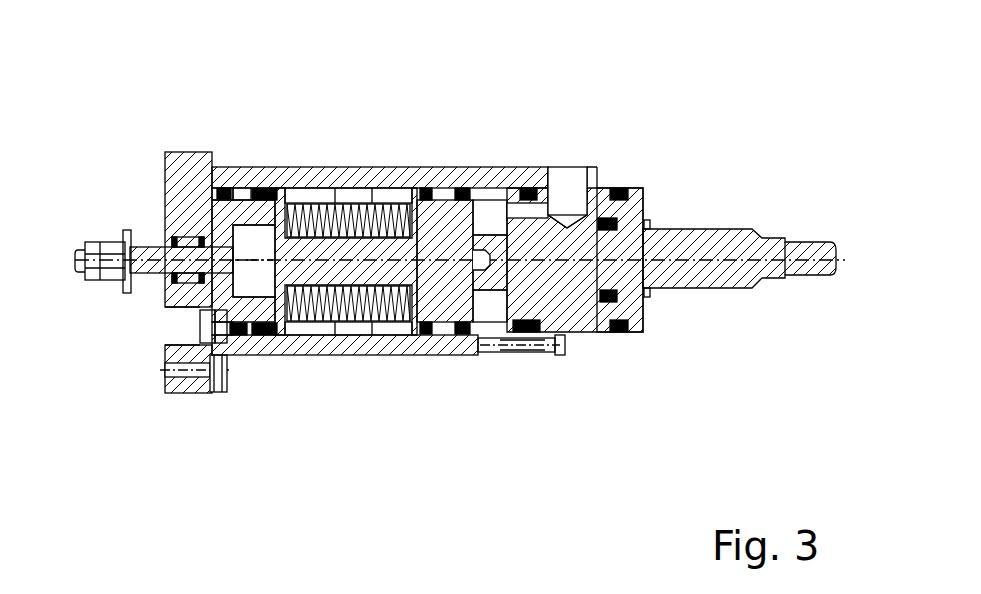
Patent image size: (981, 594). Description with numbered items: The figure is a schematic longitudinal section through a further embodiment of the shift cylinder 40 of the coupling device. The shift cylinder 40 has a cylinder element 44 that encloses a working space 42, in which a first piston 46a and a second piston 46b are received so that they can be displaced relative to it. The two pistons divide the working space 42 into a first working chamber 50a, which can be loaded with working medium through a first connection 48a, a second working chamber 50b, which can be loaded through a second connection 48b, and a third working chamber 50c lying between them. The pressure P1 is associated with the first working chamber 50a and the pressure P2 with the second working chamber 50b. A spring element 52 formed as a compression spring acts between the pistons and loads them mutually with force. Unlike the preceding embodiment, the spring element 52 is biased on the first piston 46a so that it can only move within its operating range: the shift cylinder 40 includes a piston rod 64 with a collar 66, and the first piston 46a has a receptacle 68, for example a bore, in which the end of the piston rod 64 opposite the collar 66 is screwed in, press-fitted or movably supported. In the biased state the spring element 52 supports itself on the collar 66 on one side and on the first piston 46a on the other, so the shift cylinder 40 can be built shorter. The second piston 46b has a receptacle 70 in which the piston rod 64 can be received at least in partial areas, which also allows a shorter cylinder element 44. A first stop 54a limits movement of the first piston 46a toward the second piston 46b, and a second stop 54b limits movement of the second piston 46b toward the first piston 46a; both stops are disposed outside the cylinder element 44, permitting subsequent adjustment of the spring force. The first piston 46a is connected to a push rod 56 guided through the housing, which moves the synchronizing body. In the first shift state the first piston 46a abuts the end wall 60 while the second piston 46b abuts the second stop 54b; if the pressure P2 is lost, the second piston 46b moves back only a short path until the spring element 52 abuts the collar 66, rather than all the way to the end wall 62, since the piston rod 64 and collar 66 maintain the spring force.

The shift cylinder 40 is at (238, 452).
The working space 42 is at (150, 208).
The cylinder element 44 is at (323, 170).
The first piston 46a is at (450, 212).
The second piston 46b is at (238, 212).
The first connection 48a is at (580, 172).
The second connection 48b is at (183, 326).
The first working chamber 50a is at (491, 314).
The second working chamber 50b is at (222, 190).
The third working chamber 50c is at (318, 326).
The spring element 52 is at (333, 288).
The first stop 54a is at (643, 287).
The second stop 54b is at (132, 295).
The push rod 56 is at (740, 238).
The end wall 60 is at (547, 353).
The end wall 62 is at (165, 178).
The piston rod 64 is at (293, 254).
The collar 66 is at (282, 238).
The receptacle 68 is at (448, 243).
The receptacle 70 is at (258, 238).
The pressure P1 is at (567, 176).
The pressure P2 is at (160, 325).